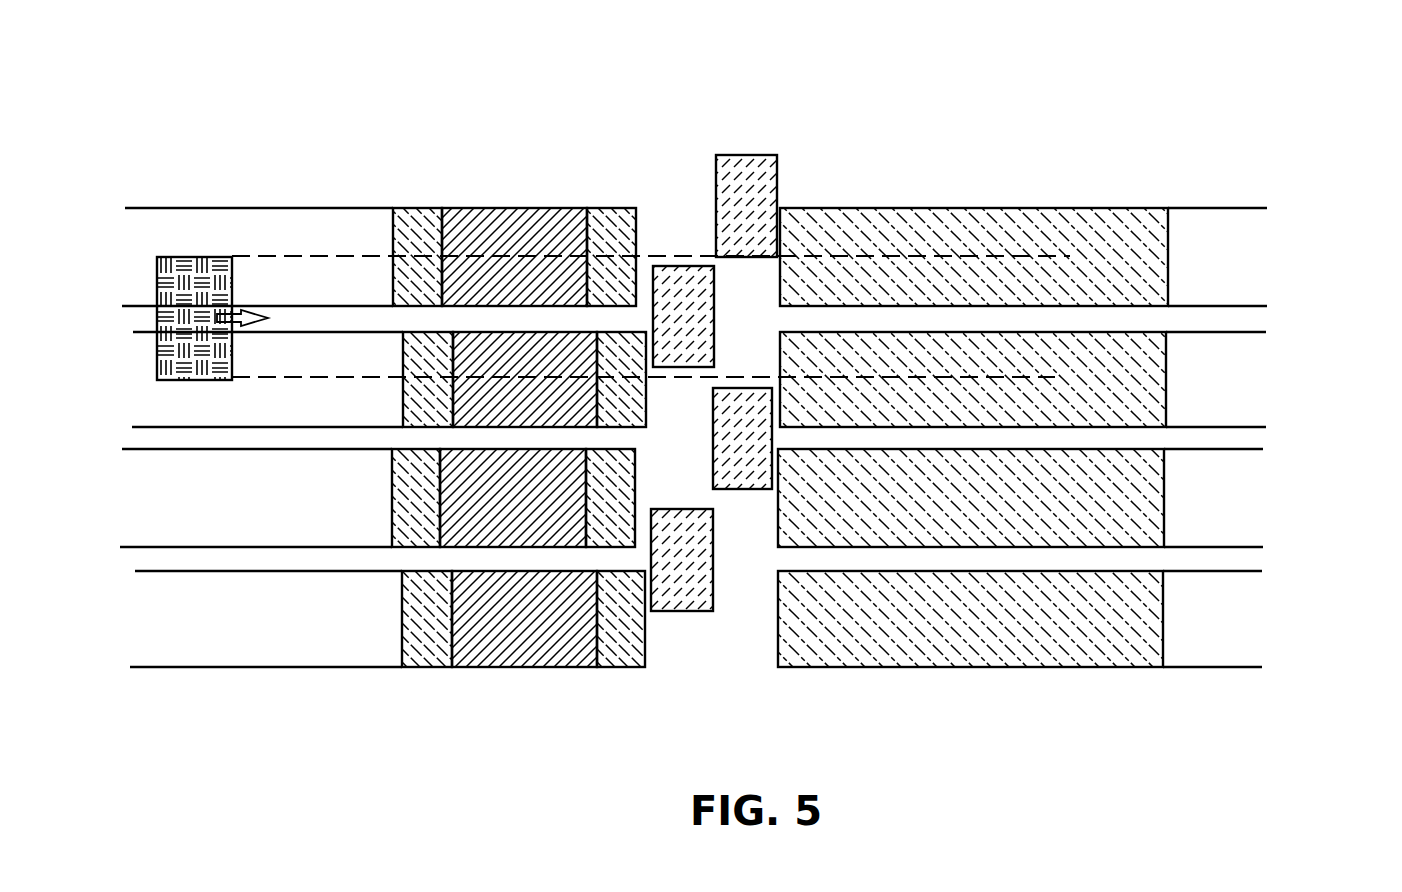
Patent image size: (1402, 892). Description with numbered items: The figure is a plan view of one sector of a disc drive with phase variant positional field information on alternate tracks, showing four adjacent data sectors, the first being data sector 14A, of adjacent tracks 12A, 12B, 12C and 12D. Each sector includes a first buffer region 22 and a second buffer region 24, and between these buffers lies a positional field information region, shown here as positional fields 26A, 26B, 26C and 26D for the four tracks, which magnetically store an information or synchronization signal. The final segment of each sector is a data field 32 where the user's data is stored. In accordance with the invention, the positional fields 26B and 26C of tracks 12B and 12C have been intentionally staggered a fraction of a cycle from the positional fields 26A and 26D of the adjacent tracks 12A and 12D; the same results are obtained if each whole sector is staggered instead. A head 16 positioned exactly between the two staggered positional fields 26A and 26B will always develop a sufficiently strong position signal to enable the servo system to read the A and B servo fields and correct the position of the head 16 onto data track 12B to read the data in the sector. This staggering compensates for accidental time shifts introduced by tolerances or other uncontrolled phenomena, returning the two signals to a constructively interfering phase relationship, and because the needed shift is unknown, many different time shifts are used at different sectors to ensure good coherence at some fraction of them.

The track 12A is at (1286, 207).
The track 12B is at (1284, 330).
The track 12C is at (1278, 449).
The track 12D is at (1274, 570).
The data sector 14A is at (1173, 105).
The head 16 is at (157, 280).
The first buffer region 22 is at (407, 225).
The second buffer region 24 is at (595, 223).
The positional field 26A is at (465, 233).
The positional field 26B is at (573, 405).
The positional field 26C is at (472, 520).
The positional field 26D is at (515, 652).
The data field 32 is at (990, 232).